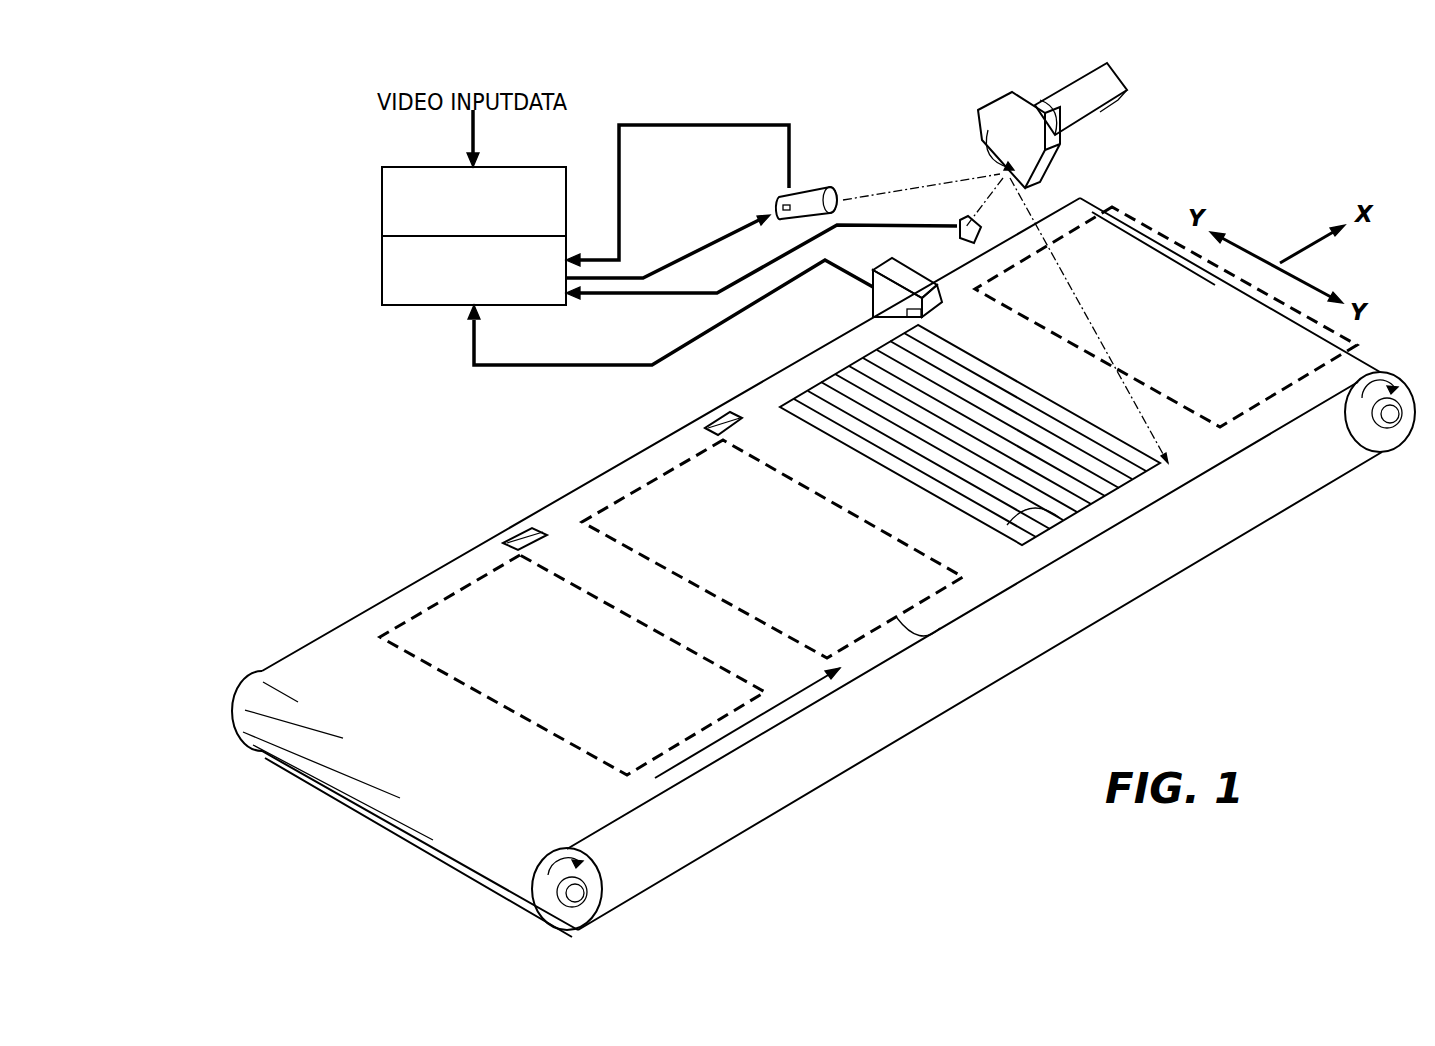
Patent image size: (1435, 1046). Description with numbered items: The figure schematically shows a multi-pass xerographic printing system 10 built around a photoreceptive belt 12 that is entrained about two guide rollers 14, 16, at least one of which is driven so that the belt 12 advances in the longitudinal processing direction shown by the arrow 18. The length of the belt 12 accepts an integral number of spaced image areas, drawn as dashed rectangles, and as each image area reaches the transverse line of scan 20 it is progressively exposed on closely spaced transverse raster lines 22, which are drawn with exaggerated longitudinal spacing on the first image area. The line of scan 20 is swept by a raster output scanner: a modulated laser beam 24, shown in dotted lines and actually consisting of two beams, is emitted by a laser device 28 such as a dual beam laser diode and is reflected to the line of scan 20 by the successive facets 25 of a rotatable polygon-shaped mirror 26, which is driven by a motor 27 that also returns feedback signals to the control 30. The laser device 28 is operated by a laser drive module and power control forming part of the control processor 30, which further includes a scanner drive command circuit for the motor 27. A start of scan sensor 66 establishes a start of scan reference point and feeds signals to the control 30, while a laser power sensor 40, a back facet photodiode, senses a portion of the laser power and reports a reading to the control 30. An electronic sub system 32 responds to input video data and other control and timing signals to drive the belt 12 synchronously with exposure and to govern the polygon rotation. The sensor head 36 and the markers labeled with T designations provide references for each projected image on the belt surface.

The multi-pass xerographic printing system 10 is at (372, 480).
The photoreceptive belt 12 is at (723, 835).
The guide roller 14 is at (600, 866).
The guide roller 16 is at (1372, 444).
The arrow 18 is at (818, 703).
The transverse line of scan 20 is at (1137, 443).
The transverse raster lines 22 is at (1060, 518).
The modulated laser beam 24 is at (912, 188).
The facets 25 is at (1010, 100).
The polygon-shaped mirror 26 is at (1044, 118).
The motor 27 is at (1067, 85).
The laser device 28 is at (812, 196).
The control processor 30 is at (418, 307).
The electronic sub system (ESS) 32 is at (407, 165).
The sensor head 36 is at (863, 280).
The laser power sensor 40 is at (779, 205).
The start of scan (SOS) sensor 66 is at (963, 242).